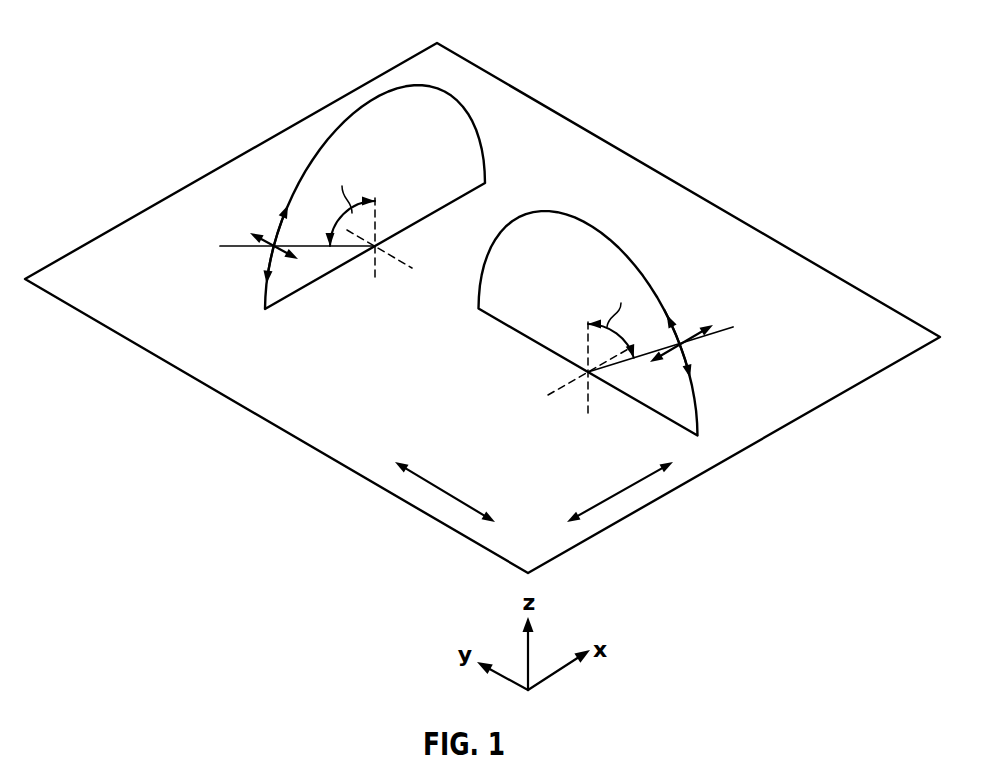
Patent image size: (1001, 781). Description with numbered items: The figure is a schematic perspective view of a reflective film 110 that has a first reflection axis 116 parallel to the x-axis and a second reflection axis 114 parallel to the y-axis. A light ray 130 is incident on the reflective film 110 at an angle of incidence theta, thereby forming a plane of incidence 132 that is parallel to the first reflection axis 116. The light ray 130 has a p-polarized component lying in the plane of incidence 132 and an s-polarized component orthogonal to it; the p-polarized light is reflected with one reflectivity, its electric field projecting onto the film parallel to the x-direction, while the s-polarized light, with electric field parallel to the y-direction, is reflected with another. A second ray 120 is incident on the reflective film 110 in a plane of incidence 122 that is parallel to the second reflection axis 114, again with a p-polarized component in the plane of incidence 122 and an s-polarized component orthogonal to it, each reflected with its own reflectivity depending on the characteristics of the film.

The reflective film 110 is at (112, 285).
The second reflection axis 114 is at (447, 490).
The first reflection axis 116 is at (628, 490).
The ray 120 is at (720, 331).
The plane of incidence 122 is at (573, 213).
The light ray 130 is at (232, 245).
The plane of incidence 132 is at (393, 90).